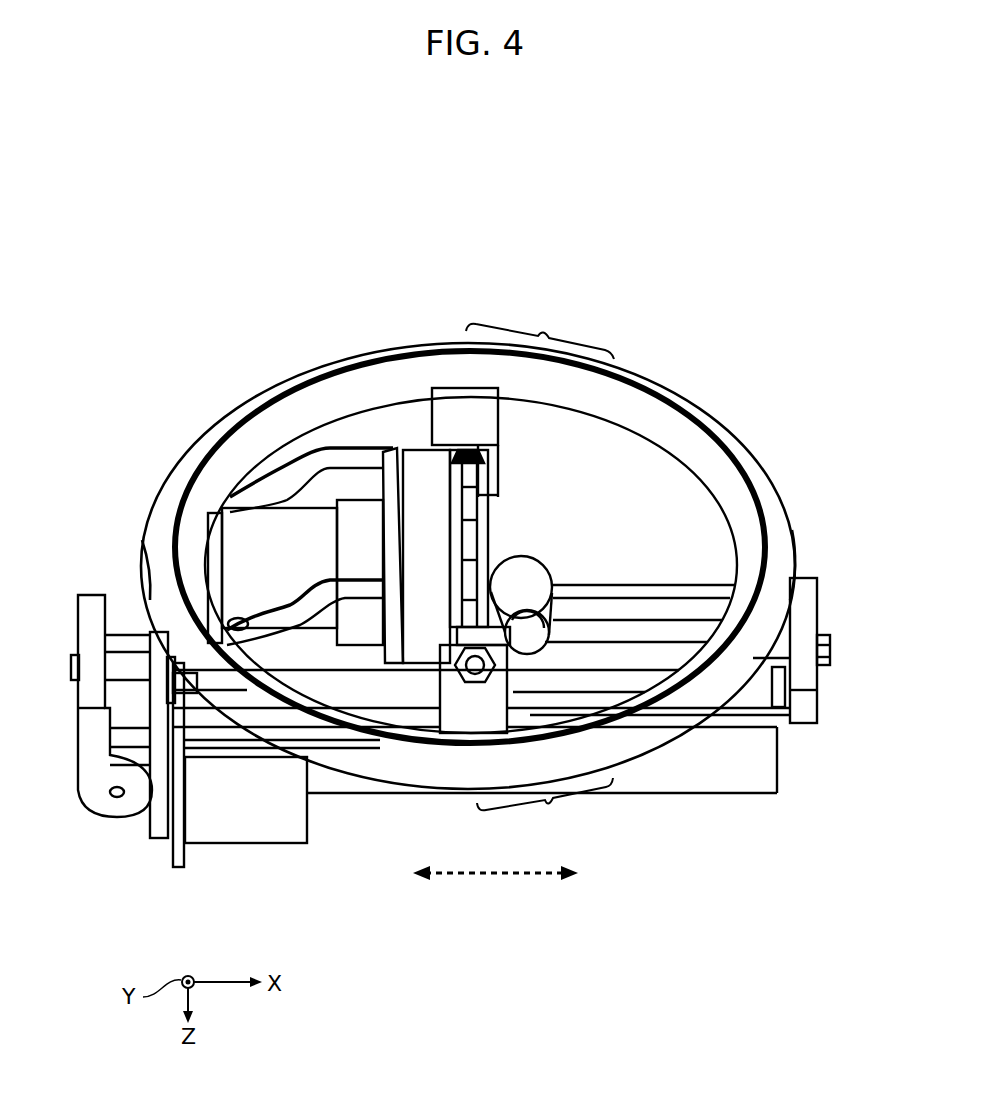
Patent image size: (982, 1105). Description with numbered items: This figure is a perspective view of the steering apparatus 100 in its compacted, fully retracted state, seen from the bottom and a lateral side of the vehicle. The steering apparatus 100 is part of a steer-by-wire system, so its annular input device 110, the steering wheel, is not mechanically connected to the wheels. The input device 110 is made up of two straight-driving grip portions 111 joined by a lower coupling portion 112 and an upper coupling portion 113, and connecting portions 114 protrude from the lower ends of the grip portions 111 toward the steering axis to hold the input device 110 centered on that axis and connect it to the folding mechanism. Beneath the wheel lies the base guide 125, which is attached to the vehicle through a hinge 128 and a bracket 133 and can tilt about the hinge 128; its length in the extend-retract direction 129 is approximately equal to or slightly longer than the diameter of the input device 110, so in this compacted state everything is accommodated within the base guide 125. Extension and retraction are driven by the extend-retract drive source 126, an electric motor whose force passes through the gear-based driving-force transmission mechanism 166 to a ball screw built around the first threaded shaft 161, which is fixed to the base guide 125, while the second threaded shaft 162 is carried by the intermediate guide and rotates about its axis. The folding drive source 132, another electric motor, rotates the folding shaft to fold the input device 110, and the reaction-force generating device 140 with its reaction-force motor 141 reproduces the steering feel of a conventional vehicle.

The steering apparatus 100 is at (205, 270).
The input device 110 is at (700, 404).
The straight-driving grip portions 111 is at (540, 573).
The lower coupling portion 112 is at (151, 553).
The upper coupling portion 113 is at (792, 546).
The connecting portions 114 is at (465, 413).
The base guide 125 is at (802, 678).
The extend-retract drive source 126 is at (280, 830).
The hinge 128 is at (110, 820).
The extend-retract direction 129 is at (482, 877).
The folding drive source 132 is at (553, 590).
The bracket 133 is at (675, 788).
The reaction-force generating device 140 is at (253, 557).
The reaction-force motor 141 is at (258, 563).
The first threaded shaft 161 is at (777, 660).
The second threaded shaft 162 is at (400, 712).
The driving-force transmission mechanism 166 is at (158, 840).